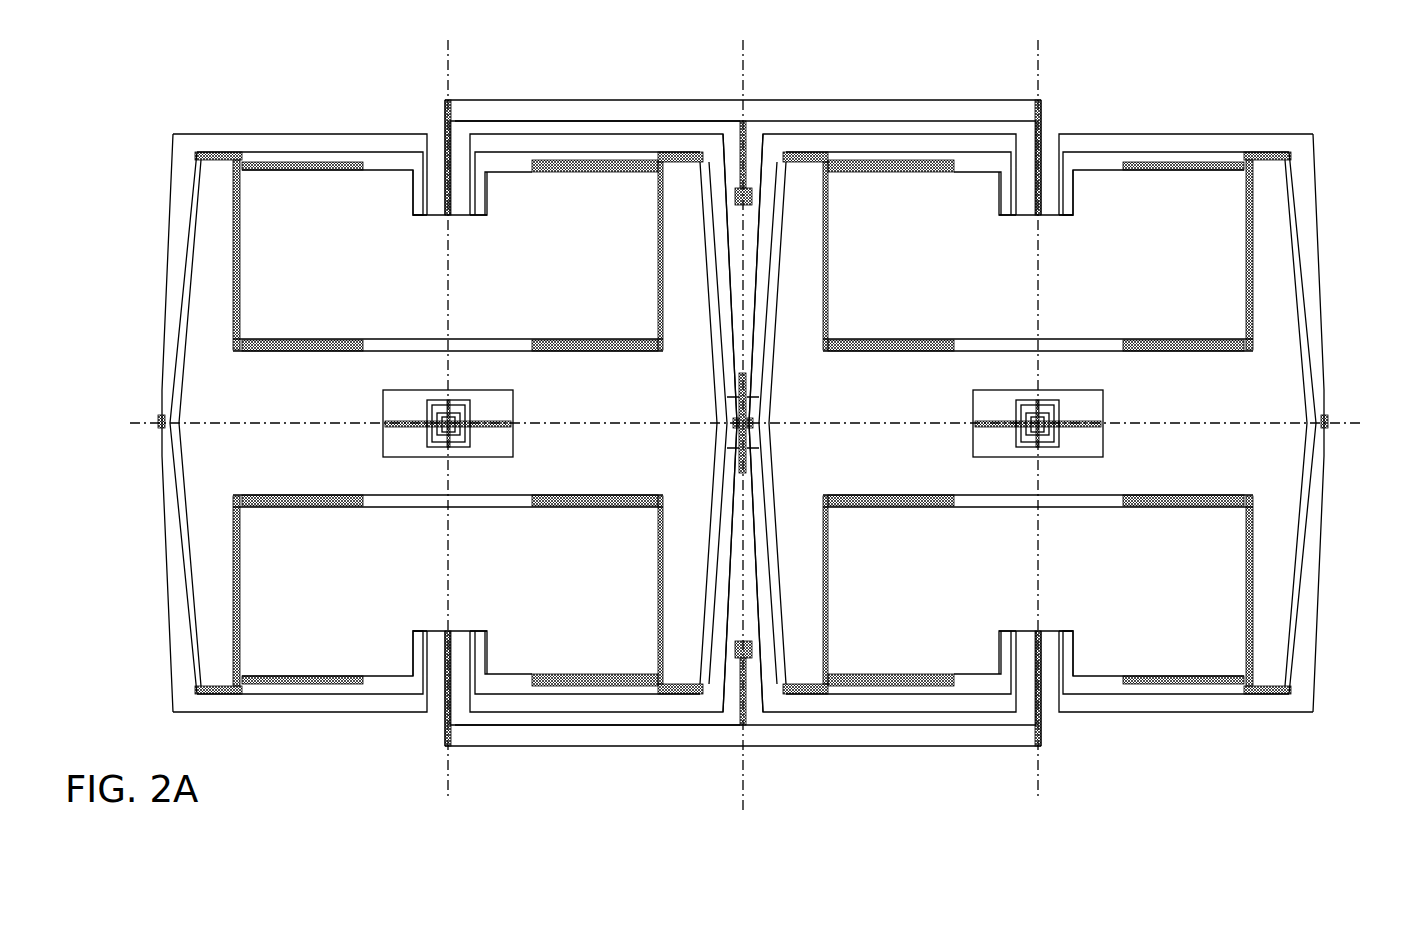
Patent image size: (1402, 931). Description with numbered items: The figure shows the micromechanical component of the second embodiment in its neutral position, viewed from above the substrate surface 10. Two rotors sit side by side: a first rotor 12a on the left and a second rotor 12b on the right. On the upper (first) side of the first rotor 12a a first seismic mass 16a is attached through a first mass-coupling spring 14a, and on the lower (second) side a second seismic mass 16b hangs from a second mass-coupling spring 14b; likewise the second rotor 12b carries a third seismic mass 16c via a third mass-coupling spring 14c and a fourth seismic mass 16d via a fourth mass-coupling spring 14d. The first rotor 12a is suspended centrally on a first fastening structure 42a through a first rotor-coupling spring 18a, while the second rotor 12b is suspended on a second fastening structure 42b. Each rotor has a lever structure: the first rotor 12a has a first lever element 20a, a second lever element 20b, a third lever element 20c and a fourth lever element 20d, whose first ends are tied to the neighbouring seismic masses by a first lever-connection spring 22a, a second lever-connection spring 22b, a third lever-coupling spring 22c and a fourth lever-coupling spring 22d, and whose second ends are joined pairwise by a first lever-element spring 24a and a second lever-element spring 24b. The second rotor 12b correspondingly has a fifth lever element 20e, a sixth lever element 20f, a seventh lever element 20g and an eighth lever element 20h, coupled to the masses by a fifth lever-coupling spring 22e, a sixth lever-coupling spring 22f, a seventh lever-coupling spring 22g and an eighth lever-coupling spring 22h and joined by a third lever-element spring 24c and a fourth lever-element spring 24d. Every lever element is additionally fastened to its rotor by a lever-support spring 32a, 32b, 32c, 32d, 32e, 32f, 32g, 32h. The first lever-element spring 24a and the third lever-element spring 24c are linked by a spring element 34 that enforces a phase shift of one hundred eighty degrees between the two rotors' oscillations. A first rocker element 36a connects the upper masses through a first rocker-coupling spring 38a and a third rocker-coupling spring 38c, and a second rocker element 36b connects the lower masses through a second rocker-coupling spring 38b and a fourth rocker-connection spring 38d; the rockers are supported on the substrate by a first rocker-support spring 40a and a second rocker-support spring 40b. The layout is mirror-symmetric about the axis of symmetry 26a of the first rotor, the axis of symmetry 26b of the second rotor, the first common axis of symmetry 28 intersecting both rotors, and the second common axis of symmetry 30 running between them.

The substrate surface 10 is at (364, 81).
The first rotor 12a is at (255, 398).
The second rotor 12b is at (1232, 437).
The first mass-coupling spring 14a is at (581, 172).
The second mass-coupling spring 14b is at (312, 507).
The third mass-coupling spring 14c is at (897, 172).
The fourth mass-coupling spring 14d is at (903, 507).
The first seismic mass 16a is at (303, 229).
The second seismic mass 16b is at (303, 612).
The third seismic mass 16c is at (1200, 258).
The fourth seismic mass 16d is at (1200, 612).
The first rotor-coupling spring 18a is at (403, 412).
The first lever element 20a is at (574, 140).
The second lever element 20b is at (620, 712).
The third lever element 20c is at (275, 140).
The fourth lever element 20d is at (375, 712).
The fifth lever element 20e is at (885, 143).
The sixth lever element 20f is at (948, 712).
The seventh lever element 20g is at (1188, 143).
The eighth lever element 20h is at (1182, 712).
The first lever-connection spring 22a is at (462, 168).
The second lever-connection spring 22b is at (472, 690).
The third lever-coupling spring 22c is at (416, 218).
The fourth lever-coupling spring 22d is at (418, 632).
The fifth lever-coupling spring 22e is at (1015, 170).
The sixth lever-coupling spring 22f is at (1015, 680).
The seventh lever-coupling spring 22g is at (1065, 170).
The eighth lever-coupling spring 22h is at (1066, 632).
The first lever-element spring 24a is at (736, 432).
The second lever-element spring 24b is at (160, 422).
The third lever-element spring 24c is at (752, 425).
The fourth lever-element spring 24d is at (1326, 422).
The axis of symmetry of first rotor 26a is at (470, 98).
The axis of symmetry of second rotor 26b is at (1035, 98).
The first common axis of symmetry 28 is at (133, 428).
The second common axis of symmetry 30 is at (738, 60).
The lever-support spring 32a is at (679, 150).
The lever-support spring 32b is at (665, 695).
The lever-support spring 32c is at (208, 150).
The lever-support spring 32d is at (230, 700).
The lever-support spring 32e is at (804, 152).
The lever-support spring 32f is at (812, 695).
The lever-support spring 32g is at (1268, 152).
The lever-support spring 32h is at (1265, 695).
The spring element 34 is at (737, 392).
The first rocker element 36a is at (640, 110).
The second rocker element 36b is at (893, 738).
The first rocker-coupling spring 38a is at (445, 105).
The second rocker-coupling spring 38b is at (455, 640).
The third rocker-coupling spring 38c is at (1041, 108).
The fourth rocker-connection spring 38d is at (1040, 712).
The first rocker-support spring 40a is at (746, 145).
The second rocker-support spring 40b is at (746, 700).
The first fastening structure 42a is at (465, 412).
The second fastening structure 42b is at (1055, 412).